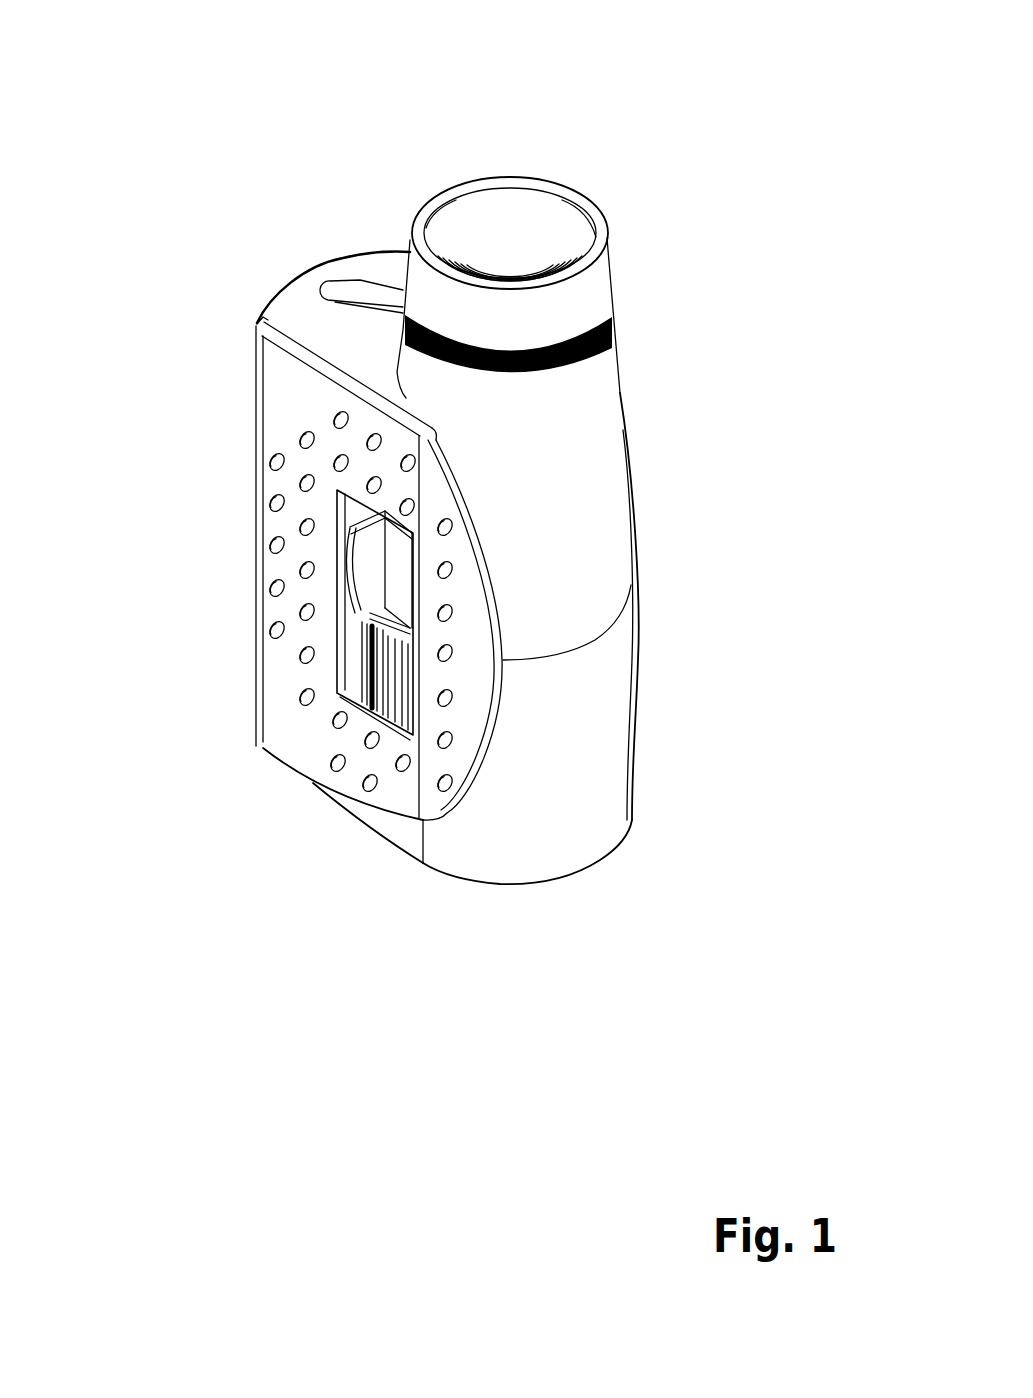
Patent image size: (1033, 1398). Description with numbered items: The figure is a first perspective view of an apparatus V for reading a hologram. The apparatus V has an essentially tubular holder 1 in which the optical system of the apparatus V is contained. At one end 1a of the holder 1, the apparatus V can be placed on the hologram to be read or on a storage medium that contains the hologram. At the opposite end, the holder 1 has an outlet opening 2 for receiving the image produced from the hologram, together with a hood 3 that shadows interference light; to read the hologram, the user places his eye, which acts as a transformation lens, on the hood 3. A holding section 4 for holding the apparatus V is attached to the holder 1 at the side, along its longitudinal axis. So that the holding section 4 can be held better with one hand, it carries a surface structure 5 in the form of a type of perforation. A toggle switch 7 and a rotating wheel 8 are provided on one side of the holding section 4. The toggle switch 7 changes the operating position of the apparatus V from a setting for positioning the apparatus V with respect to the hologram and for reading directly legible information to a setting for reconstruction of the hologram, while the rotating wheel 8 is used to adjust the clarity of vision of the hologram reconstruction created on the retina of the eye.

The holder 1 is at (578, 528).
The end of the holder 1a is at (540, 884).
The outlet opening 2 is at (511, 245).
The hood 3 is at (578, 296).
The holding section 4 is at (284, 398).
The surface structure 5 is at (337, 588).
The toggle switch 7 is at (362, 567).
The rotating wheel 8 is at (383, 672).
The apparatus V is at (725, 232).